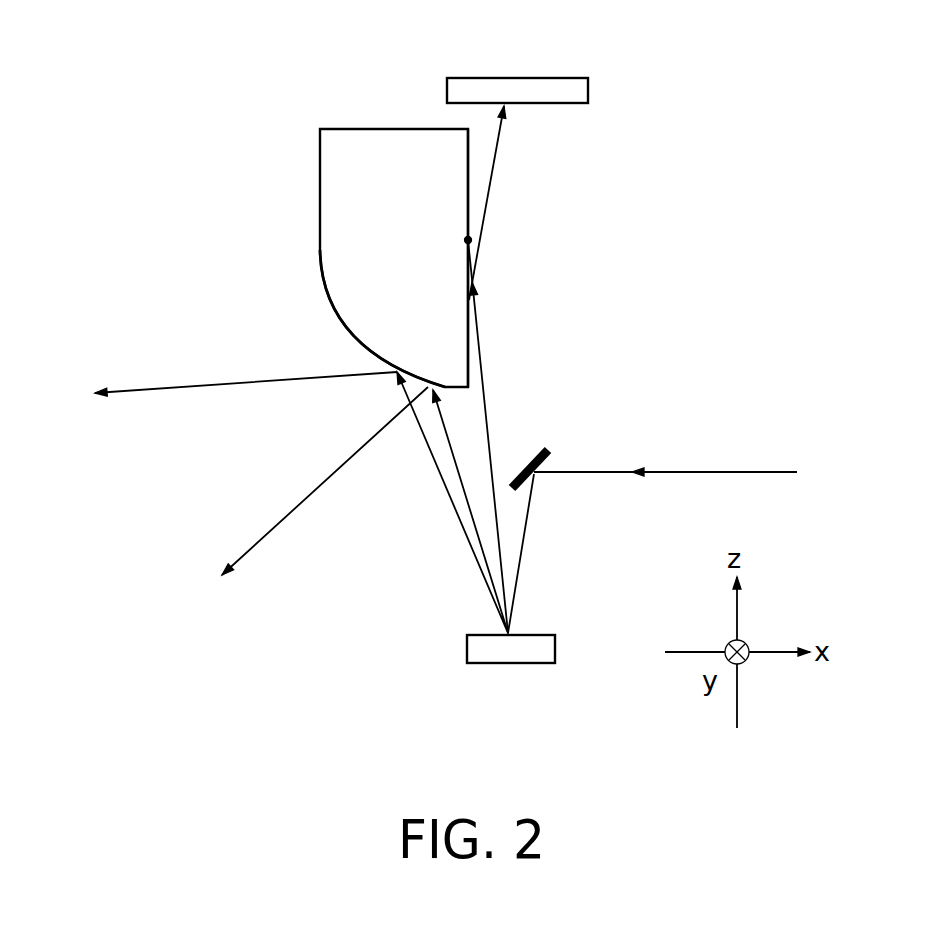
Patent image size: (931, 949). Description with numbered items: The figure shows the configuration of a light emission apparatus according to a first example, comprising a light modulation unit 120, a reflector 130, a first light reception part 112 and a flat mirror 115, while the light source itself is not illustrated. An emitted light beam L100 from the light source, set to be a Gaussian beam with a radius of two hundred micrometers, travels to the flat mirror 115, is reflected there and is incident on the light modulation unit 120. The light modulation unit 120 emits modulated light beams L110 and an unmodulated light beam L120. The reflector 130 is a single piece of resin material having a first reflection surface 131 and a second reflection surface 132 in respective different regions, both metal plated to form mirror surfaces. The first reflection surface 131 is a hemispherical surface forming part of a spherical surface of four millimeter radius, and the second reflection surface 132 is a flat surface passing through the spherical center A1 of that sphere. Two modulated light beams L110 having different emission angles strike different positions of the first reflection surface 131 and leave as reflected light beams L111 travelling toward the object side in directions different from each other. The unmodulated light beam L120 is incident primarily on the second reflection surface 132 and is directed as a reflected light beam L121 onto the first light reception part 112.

The first light reception part 112 is at (500, 86).
The flat mirror 115 is at (528, 452).
The light modulation unit 120 is at (488, 655).
The reflector 130 is at (318, 127).
The first reflection surface 131 is at (340, 316).
The second reflection surface 132 is at (469, 146).
The spherical center A1 is at (466, 240).
The emitted light beam L100 is at (718, 472).
The modulated light beams L110 is at (472, 523).
The reflected light beams L111 is at (245, 547).
The unmodulated light beam L120 is at (477, 350).
The reflected light beam L121 is at (490, 188).